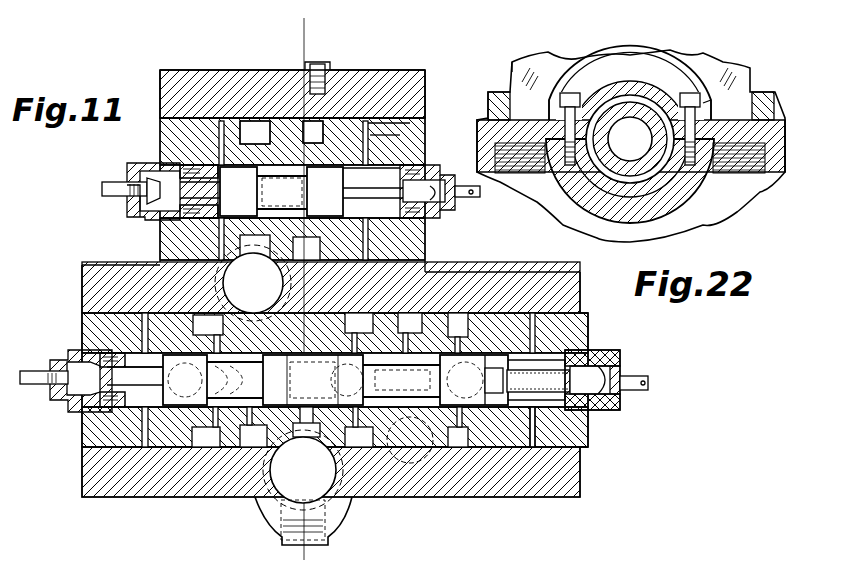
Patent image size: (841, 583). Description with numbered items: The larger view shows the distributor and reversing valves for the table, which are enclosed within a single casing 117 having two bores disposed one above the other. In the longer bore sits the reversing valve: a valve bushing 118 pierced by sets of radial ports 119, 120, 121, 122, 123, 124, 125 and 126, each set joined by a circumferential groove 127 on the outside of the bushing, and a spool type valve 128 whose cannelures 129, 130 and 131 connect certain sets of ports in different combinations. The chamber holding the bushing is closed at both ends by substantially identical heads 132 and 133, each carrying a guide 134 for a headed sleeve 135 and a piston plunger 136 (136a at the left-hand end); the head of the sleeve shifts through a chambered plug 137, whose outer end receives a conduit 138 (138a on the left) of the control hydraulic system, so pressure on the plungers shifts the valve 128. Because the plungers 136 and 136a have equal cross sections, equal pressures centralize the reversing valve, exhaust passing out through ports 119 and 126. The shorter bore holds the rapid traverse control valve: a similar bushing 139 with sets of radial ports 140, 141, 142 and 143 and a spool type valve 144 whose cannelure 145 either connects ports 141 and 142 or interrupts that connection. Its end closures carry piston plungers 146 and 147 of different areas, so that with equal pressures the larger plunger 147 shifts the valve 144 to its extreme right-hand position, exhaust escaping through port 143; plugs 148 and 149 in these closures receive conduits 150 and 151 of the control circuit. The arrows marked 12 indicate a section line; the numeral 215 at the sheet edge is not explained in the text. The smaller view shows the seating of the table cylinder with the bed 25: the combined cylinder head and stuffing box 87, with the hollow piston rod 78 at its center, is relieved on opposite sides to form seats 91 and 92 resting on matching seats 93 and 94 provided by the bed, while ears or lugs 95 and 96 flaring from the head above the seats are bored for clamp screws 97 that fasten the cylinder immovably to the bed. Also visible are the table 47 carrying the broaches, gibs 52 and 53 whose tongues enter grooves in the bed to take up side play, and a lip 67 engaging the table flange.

In FIG. 11, the section line 12- 12 is at (312, 22).
In FIG. 22, the bed 25 is at (770, 172).
In FIG. 22, the table 47 is at (512, 72).
In FIG. 22, the gib 52 is at (528, 88).
In FIG. 22, the gib 53 is at (754, 96).
In FIG. 22, the lip 67 is at (490, 94).
In FIG. 22, the hollow piston rod 78 is at (566, 190).
In FIG. 22, the combined cylinder head and stuffing box 87 is at (668, 100).
In FIG. 22, the seat 91 is at (593, 108).
In FIG. 22, the seat 92 is at (655, 97).
In FIG. 22, the seat 93 is at (520, 163).
In FIG. 22, the seat 94 is at (695, 184).
In FIG. 22, the ear or lug 95 is at (585, 98).
In FIG. 22, the ear or lug 96 is at (698, 100).
In FIG. 22, the clamp screws 97 is at (560, 94).
In FIG. 11, the casing 117 is at (440, 290).
In FIG. 11, the valve bushing 118 is at (480, 330).
In FIG. 11, the radial ports 119 is at (530, 445).
In FIG. 11, the radial ports 120 is at (440, 450).
In FIG. 11, the radial ports 121 is at (388, 450).
In FIG. 11, the radial ports 122 is at (335, 478).
In FIG. 11, the radial ports 123 is at (279, 377).
In FIG. 11, the radial ports 124 is at (230, 445).
In FIG. 11, the radial ports 125 is at (185, 447).
In FIG. 11, the radial ports 126 is at (130, 447).
In FIG. 11, the circumferential groove 127 is at (475, 447).
In FIG. 11, the spool type valve 128 is at (518, 450).
In FIG. 11, the cannelure 129 is at (411, 333).
In FIG. 11, the cannelure 130 is at (359, 333).
In FIG. 11, the cannelure 131 is at (208, 334).
In FIG. 11, the head 132 is at (540, 350).
In FIG. 11, the head 133 is at (88, 420).
In FIG. 11, the guide 134 is at (100, 445).
In FIG. 11, the headed sleeve 135 is at (612, 372).
In FIG. 11, the piston plunger 136 is at (612, 392).
In FIG. 11, the piston plunger 136a is at (82, 403).
In FIG. 11, the chambered plug 137 is at (606, 406).
In FIG. 11, the conduit 138 is at (652, 382).
In FIG. 11, the conduit 138a is at (28, 378).
In FIG. 11, the bushing 139 is at (370, 138).
In FIG. 11, the radial ports 140 is at (368, 125).
In FIG. 11, the radial ports 141 is at (296, 162).
In FIG. 11, the radial ports 142 is at (250, 165).
In FIG. 11, the radial ports 143 is at (215, 118).
In FIG. 11, the spool type valve 144 is at (350, 170).
In FIG. 11, the cannelure 145 is at (268, 165).
In FIG. 11, the piston plunger 146 is at (395, 172).
In FIG. 11, the piston plunger 147 is at (148, 163).
In FIG. 11, the plug 148 is at (442, 213).
In FIG. 11, the plug 149 is at (132, 213).
In FIG. 11, the conduit 150 is at (465, 197).
In FIG. 11, the conduit 151 is at (114, 184).
In FIG. 11, the line 215 is at (510, 579).